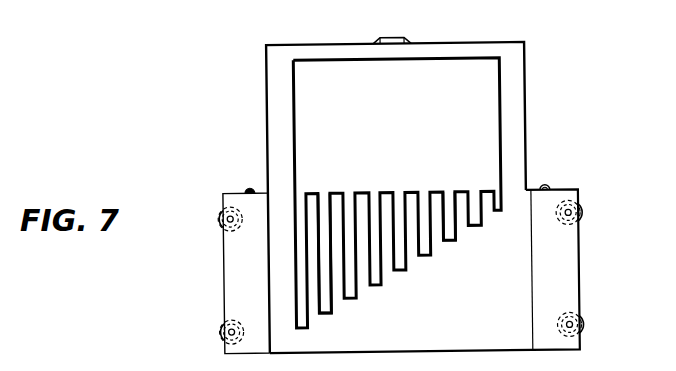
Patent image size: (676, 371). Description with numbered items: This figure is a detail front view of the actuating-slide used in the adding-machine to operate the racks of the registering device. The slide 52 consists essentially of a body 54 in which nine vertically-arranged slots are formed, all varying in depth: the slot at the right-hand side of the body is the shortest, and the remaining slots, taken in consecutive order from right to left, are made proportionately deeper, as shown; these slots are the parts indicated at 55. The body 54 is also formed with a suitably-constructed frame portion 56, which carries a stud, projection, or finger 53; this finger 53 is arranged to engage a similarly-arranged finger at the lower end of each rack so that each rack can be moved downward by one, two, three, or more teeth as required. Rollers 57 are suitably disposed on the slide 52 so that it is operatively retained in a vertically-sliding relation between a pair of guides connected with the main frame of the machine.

The slide 52 is at (421, 269).
The stud, projection, or finger 53 is at (394, 37).
The body 54 is at (397, 193).
The slots 55 is at (350, 197).
The frame portion 56 is at (271, 135).
The rollers 57 is at (219, 217).